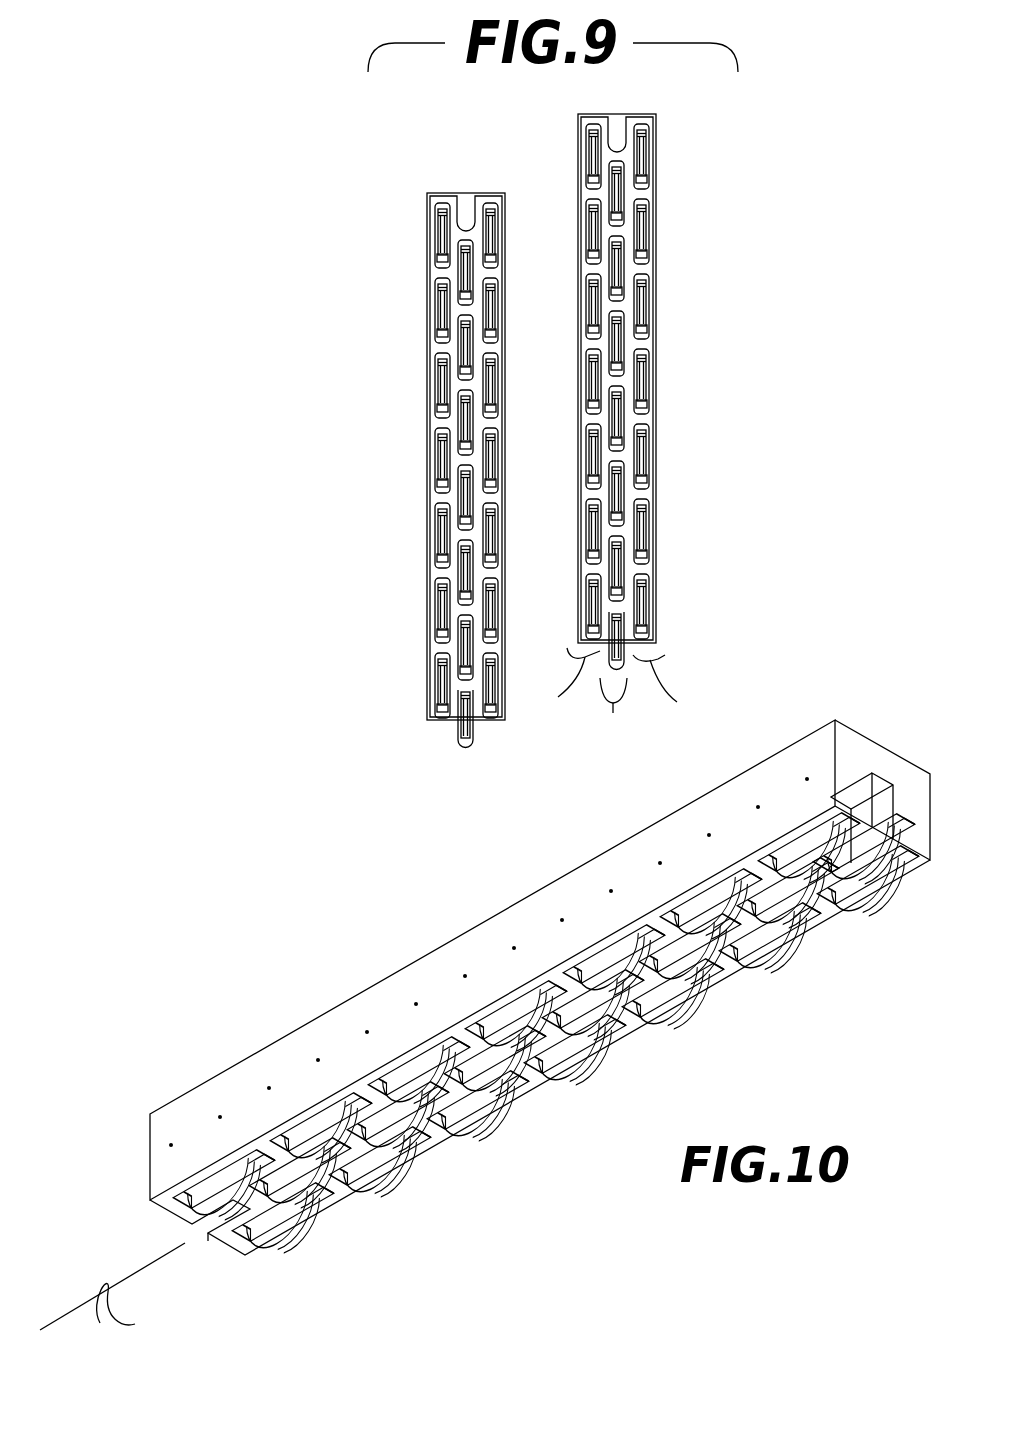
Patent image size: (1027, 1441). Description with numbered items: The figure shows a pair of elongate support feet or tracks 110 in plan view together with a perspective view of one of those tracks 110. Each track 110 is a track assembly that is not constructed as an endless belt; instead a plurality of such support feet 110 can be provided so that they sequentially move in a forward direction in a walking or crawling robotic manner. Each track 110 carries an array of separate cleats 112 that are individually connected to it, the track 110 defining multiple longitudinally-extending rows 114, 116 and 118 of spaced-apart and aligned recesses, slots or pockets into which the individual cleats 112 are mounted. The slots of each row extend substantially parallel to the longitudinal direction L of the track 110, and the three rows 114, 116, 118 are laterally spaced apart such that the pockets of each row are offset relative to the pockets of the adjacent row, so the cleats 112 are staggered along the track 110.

In FIG. 9, the support foot 110 is at (488, 194).
In FIG. 10, the support foot 110 is at (780, 762).
In FIG. 9, the cleat 112 is at (640, 458).
In FIG. 10, the cleat 112 is at (795, 1005).
In FIG. 9, the row 114 is at (568, 697).
In FIG. 9, the row 116 is at (615, 717).
In FIG. 9, the row 118 is at (673, 700).
In FIG. 10, the longitudinal direction L is at (117, 1293).